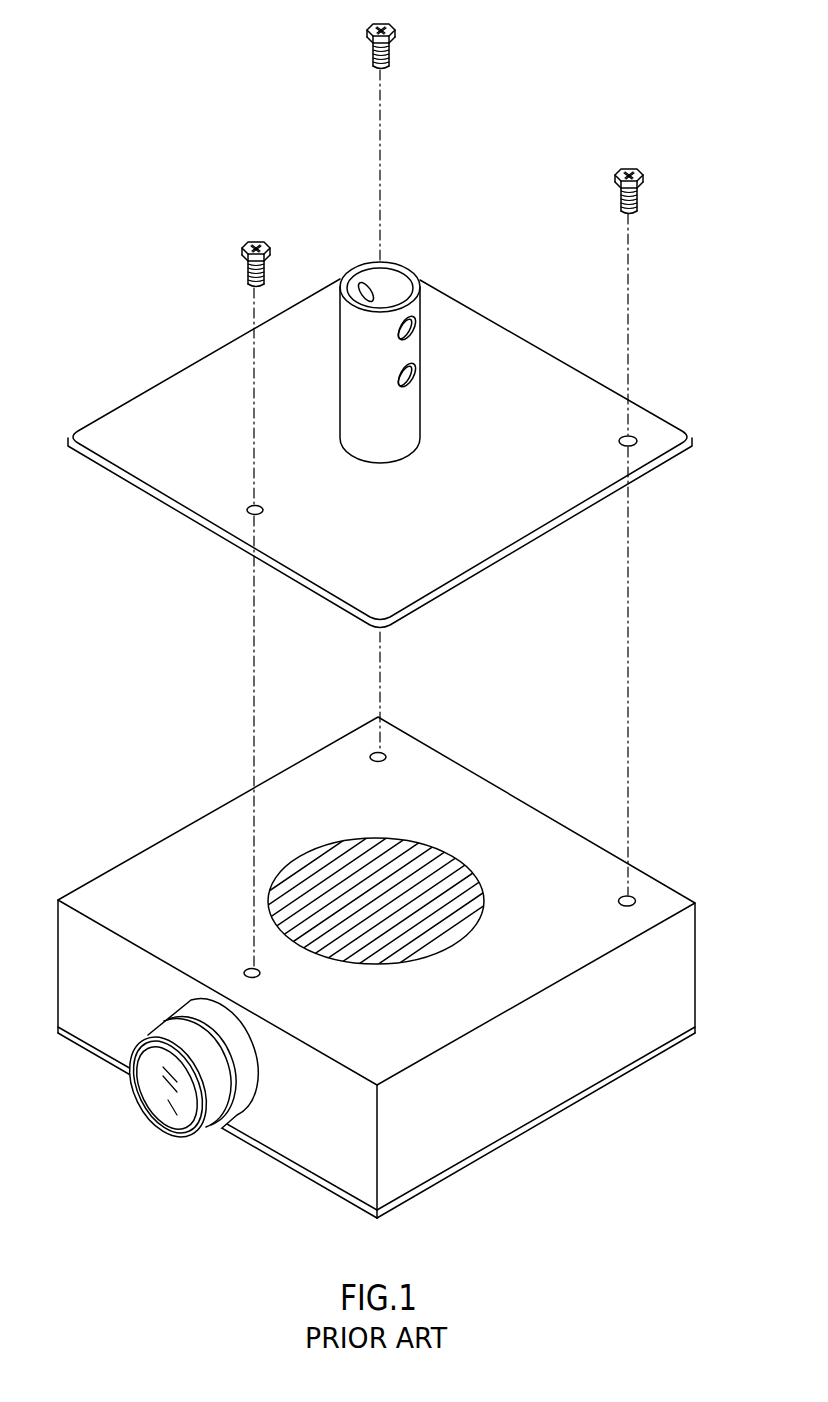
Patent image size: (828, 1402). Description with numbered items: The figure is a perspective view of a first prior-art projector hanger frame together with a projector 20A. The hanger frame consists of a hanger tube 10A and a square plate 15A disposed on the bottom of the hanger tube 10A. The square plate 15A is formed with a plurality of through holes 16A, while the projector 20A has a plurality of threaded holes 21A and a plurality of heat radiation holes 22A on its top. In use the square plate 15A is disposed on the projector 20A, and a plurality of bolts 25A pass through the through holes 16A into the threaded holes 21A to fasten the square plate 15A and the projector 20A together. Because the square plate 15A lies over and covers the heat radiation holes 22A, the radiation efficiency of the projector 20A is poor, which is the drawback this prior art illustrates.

The hanger tube 10A is at (413, 343).
The square plate 15A is at (538, 377).
The through holes 16A is at (635, 436).
The projector 20A is at (514, 790).
The threaded holes 21A is at (637, 898).
The heat radiation holes 22A is at (448, 940).
The bolts 25A is at (397, 37).